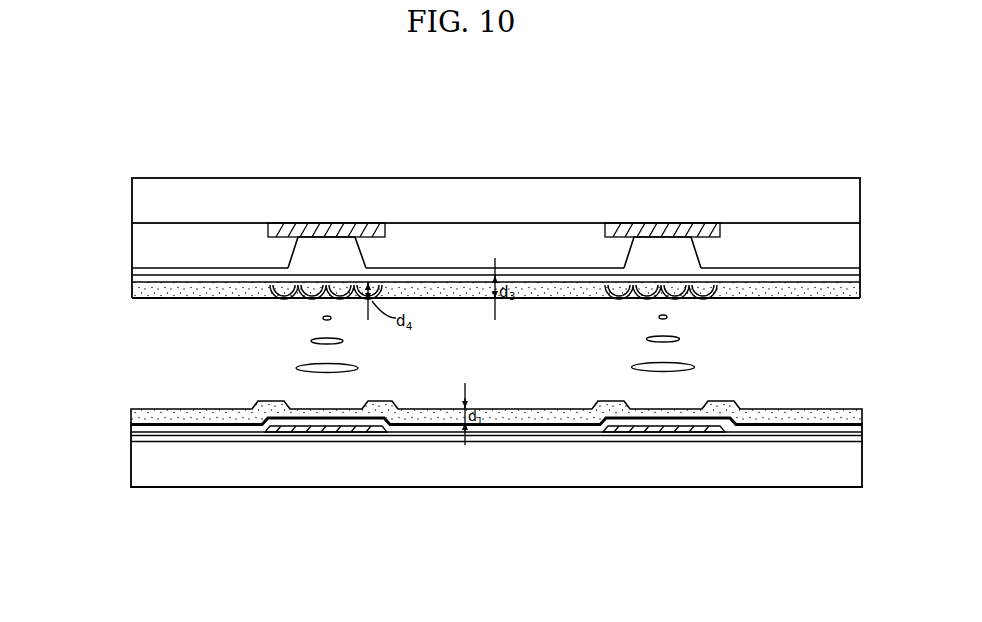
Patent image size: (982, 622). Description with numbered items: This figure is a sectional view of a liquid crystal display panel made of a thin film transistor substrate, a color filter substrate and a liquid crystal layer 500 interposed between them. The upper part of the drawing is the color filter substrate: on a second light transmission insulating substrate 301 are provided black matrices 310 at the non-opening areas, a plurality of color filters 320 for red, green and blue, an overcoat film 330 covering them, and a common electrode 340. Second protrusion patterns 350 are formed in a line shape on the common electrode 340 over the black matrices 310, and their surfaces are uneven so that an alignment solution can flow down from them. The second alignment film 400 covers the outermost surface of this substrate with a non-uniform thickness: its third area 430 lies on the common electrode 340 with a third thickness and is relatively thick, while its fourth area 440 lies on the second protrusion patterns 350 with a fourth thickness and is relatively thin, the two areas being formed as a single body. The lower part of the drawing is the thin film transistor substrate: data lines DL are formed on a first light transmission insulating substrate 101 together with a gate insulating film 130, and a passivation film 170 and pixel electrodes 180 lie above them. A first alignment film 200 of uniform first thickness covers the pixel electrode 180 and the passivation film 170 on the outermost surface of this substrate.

The second light transmission insulating substrate 301 is at (137, 200).
The color filters 320 is at (178, 233).
The black matrices 310 is at (328, 229).
The overcoat film 330 is at (133, 268).
The common electrode 340 is at (135, 278).
The second alignment film 400 is at (410, 99).
The fourth area 440 is at (417, 268).
The third area 430 is at (538, 288).
The second protrusion patterns 350 is at (285, 288).
The liquid crystal layer 500 is at (708, 347).
The pixel electrodes 180 is at (132, 410).
The passivation film 170 is at (132, 424).
The first alignment film 200 is at (510, 425).
The data lines DL is at (333, 434).
The gate insulating film 130 is at (132, 435).
The first light transmission insulating substrate 101 is at (133, 476).